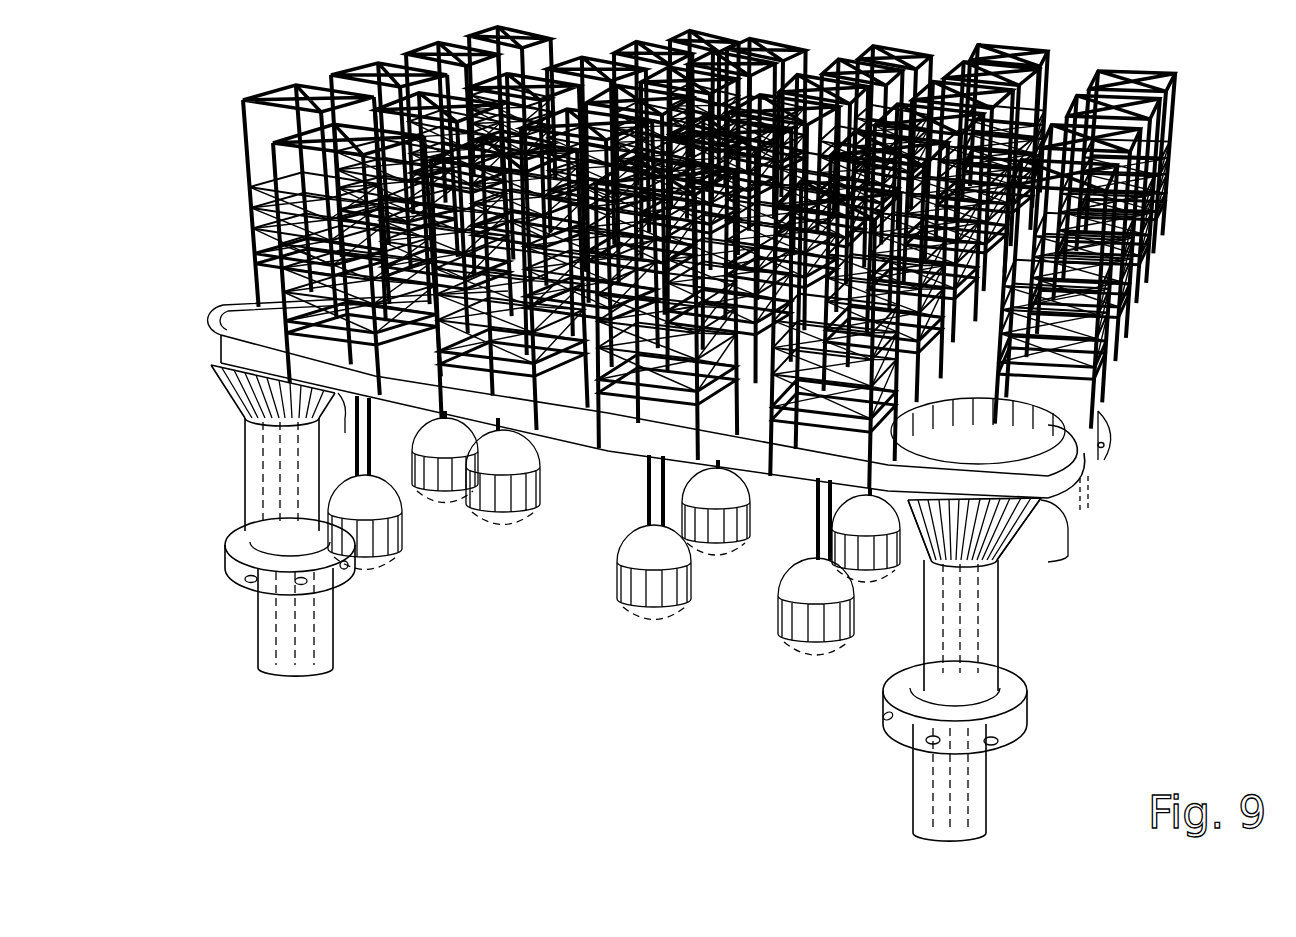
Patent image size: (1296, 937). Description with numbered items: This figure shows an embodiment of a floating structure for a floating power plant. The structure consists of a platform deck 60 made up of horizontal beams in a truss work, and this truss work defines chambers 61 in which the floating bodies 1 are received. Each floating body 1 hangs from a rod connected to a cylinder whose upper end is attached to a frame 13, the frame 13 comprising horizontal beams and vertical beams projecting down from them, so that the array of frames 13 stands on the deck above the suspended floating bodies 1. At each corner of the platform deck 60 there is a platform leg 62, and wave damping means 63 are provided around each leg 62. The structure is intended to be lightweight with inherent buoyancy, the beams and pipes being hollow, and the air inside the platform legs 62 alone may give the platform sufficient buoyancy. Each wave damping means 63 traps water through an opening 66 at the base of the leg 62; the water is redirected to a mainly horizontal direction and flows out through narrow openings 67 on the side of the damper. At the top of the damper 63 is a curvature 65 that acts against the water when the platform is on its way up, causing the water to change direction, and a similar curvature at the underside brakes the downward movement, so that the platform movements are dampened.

The frame 13 is at (1153, 90).
The platform deck 60 is at (553, 402).
The chambers 61 is at (1103, 382).
The floating body 1 is at (792, 662).
The platform leg 62 is at (977, 620).
The wave damping means 63 is at (1003, 678).
The curvature 65 is at (887, 680).
The narrow openings 67 is at (985, 733).
The opening 66 is at (902, 818).